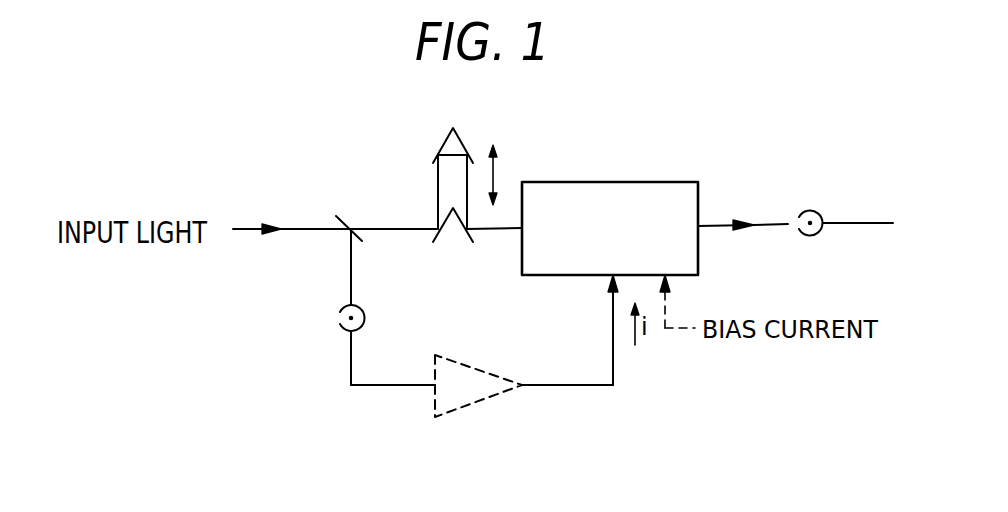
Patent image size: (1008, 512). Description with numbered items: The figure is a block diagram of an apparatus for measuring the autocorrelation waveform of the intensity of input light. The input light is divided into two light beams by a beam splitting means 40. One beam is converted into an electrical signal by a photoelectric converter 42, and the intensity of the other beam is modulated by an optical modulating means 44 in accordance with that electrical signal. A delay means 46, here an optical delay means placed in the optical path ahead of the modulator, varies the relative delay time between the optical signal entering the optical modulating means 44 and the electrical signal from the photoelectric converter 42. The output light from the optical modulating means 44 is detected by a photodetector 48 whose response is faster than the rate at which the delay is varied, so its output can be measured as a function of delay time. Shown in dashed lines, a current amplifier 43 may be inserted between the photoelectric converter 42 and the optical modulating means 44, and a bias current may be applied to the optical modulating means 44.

The beam splitting means 40 is at (340, 214).
The photoelectric converter 42 is at (337, 320).
The current amplifier 43 is at (490, 398).
The optical modulating means 44 is at (674, 182).
The delay means 46 is at (458, 134).
The photodetector 48 is at (812, 236).